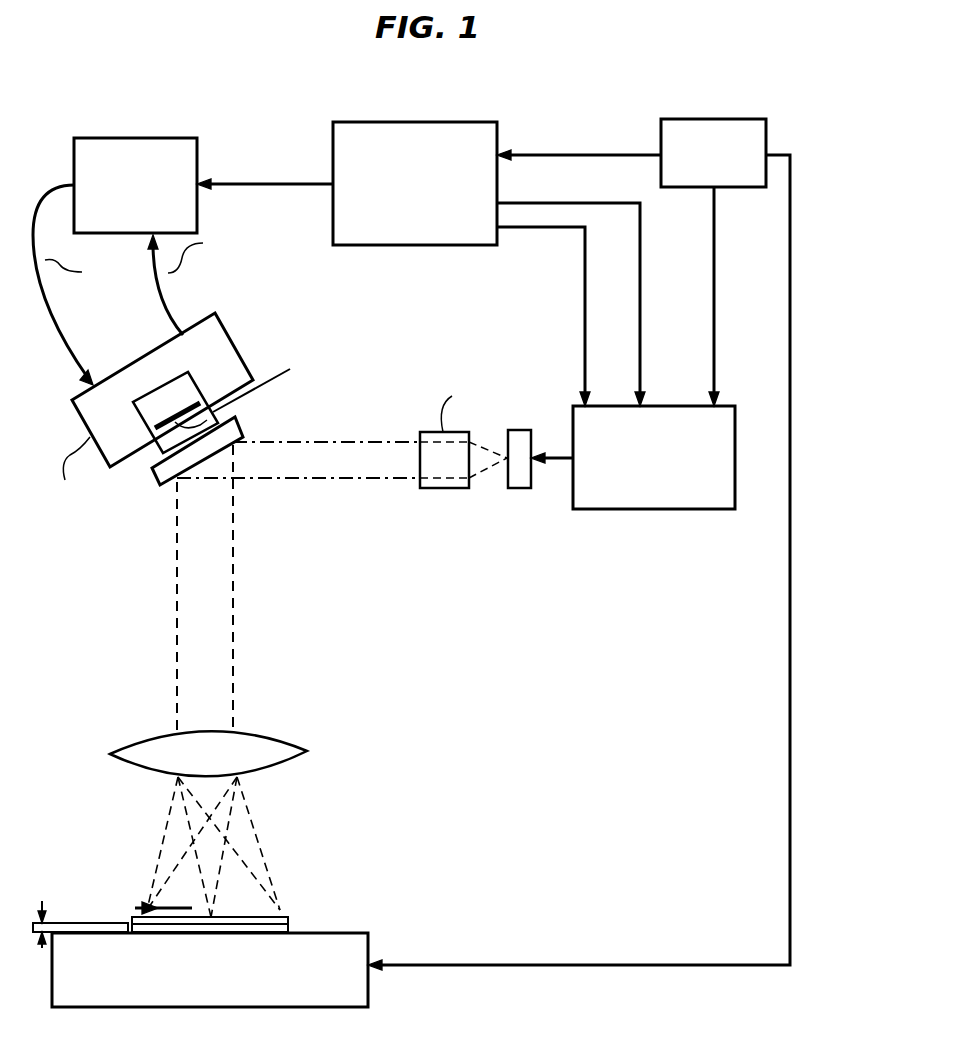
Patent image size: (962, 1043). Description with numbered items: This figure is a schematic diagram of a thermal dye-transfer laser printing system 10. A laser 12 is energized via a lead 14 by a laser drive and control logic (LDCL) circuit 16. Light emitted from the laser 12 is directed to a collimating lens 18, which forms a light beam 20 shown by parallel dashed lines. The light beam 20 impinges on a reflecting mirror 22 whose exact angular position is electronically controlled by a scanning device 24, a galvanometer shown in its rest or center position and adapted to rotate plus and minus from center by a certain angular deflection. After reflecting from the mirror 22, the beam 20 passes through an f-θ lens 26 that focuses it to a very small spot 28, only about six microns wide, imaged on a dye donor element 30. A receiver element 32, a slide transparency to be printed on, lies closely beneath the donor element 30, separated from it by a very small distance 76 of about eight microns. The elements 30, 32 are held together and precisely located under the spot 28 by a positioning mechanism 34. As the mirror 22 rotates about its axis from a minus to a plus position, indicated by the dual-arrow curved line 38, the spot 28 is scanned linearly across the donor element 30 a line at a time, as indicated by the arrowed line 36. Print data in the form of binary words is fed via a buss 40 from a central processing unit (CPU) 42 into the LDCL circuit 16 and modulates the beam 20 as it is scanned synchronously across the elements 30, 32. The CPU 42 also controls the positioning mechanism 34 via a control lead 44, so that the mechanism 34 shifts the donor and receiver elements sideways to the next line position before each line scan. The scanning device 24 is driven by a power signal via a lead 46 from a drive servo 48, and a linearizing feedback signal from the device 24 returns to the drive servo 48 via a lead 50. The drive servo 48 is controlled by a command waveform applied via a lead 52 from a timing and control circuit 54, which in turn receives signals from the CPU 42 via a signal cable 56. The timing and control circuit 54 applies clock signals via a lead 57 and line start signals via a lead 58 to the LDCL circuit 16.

The laser printing system 10 is at (182, 57).
The laser 12 is at (522, 489).
The lead 14 is at (570, 453).
The laser drive and control logic (LDCL) circuit 16 is at (652, 510).
The collimating lens 18 is at (457, 489).
The light beam 20 is at (390, 480).
The reflecting mirror 22 is at (248, 428).
The scanning device 24 is at (240, 343).
The f-θ lens 26 is at (308, 751).
The focused light spot 28 is at (213, 917).
The dye donor element 30 is at (288, 917).
The receiver element 32 is at (288, 930).
The positioning mechanism 34 is at (370, 944).
The arrowed line 36 is at (153, 910).
The dual-arrow curved line 38 is at (264, 381).
The buss 40 is at (714, 327).
The central processing unit (CPU) 42 is at (717, 118).
The control lead 44 is at (790, 345).
The lead 46 is at (64, 338).
The drive servo 48 is at (100, 137).
The lead 50 is at (168, 310).
The lead 52 is at (243, 186).
The timing and control circuit 54 is at (372, 122).
The signal cable 56 is at (557, 152).
The lead 57 is at (585, 338).
The lead 58 is at (640, 337).
The distance 76 is at (33, 923).